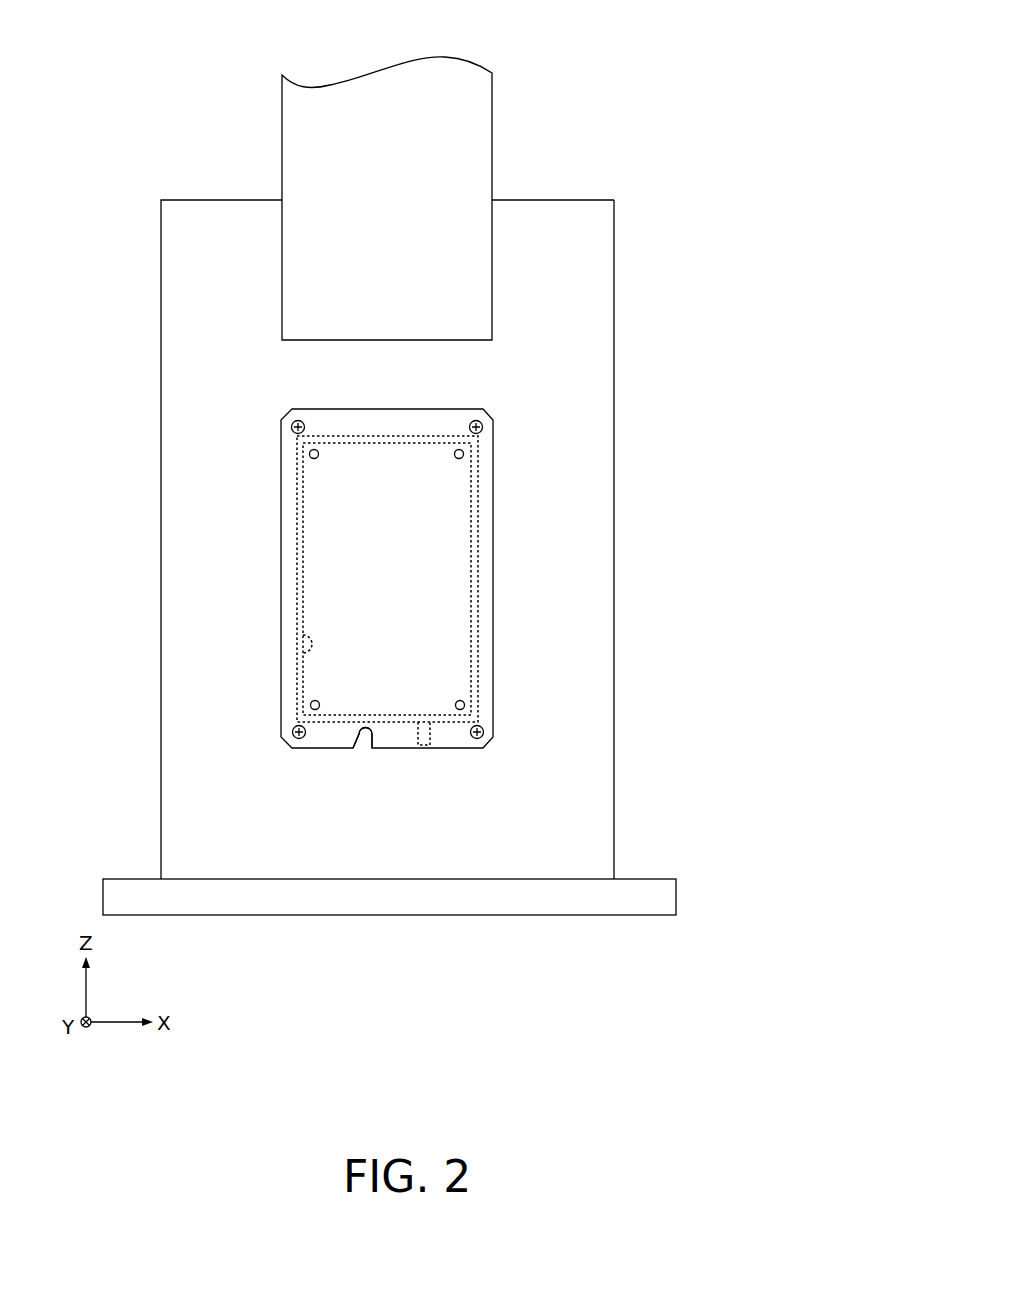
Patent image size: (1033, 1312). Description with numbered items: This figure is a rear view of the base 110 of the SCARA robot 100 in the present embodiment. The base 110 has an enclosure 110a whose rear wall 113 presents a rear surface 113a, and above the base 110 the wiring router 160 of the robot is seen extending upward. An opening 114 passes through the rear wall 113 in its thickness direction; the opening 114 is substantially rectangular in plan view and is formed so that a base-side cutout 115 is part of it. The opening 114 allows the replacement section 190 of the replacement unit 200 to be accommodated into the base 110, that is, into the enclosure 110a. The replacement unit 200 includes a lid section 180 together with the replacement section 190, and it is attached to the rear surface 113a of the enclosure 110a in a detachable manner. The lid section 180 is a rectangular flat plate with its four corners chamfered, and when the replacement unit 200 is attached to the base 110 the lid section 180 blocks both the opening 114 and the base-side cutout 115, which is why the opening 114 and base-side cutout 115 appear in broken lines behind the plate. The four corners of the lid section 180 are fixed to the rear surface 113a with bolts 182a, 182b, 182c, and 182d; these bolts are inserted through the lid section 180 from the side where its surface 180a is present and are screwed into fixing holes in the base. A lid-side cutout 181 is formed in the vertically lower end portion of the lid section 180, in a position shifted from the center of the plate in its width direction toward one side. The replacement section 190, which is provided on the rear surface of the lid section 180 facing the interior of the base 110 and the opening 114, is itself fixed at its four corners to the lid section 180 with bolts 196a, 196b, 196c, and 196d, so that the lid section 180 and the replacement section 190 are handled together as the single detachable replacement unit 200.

The SCARA robot 100 is at (666, 86).
The base 110 is at (644, 219).
The enclosure 110a is at (624, 360).
The rear wall 113 is at (600, 795).
The rear surface 113a is at (654, 539).
The opening 114 is at (298, 653).
The base-side cutout 115 is at (418, 745).
The wiring router 160 is at (470, 153).
The lid section 180 is at (385, 617).
The surface 180a is at (323, 548).
The lid-side cutout 181 is at (360, 748).
The bolt 182a is at (483, 422).
The bolt 182b is at (483, 736).
The bolt 182c is at (293, 743).
The bolt 182d is at (298, 420).
The replacement section 190 is at (478, 590).
The bolt 196a is at (459, 449).
The bolt 196b is at (465, 706).
The bolt 196c is at (311, 706).
The bolt 196d is at (318, 450).
The replacement unit 200 is at (512, 482).